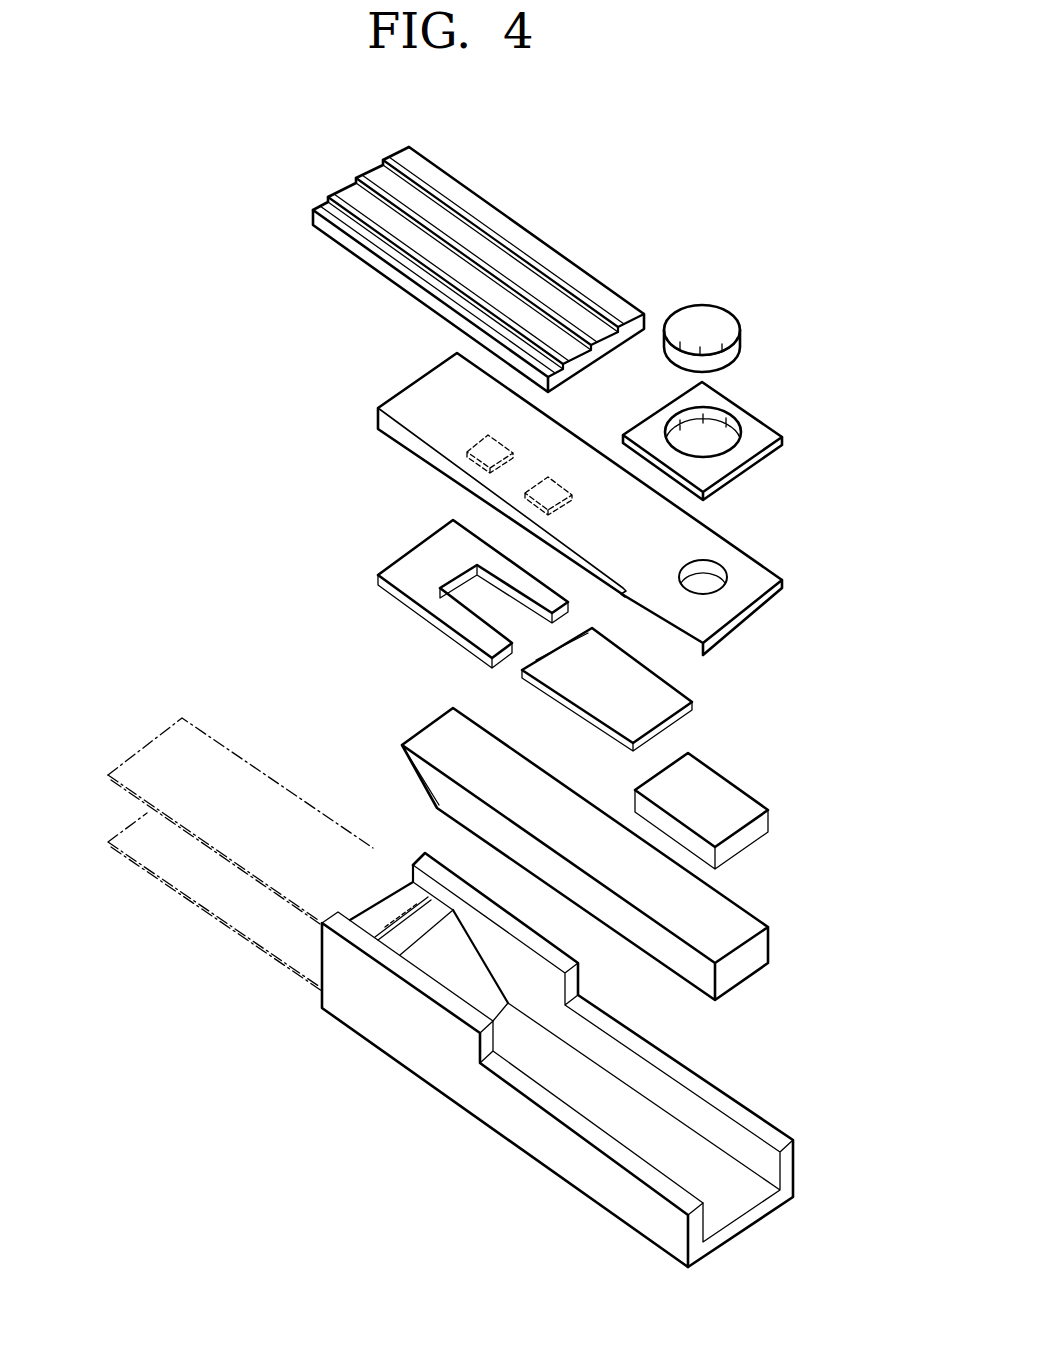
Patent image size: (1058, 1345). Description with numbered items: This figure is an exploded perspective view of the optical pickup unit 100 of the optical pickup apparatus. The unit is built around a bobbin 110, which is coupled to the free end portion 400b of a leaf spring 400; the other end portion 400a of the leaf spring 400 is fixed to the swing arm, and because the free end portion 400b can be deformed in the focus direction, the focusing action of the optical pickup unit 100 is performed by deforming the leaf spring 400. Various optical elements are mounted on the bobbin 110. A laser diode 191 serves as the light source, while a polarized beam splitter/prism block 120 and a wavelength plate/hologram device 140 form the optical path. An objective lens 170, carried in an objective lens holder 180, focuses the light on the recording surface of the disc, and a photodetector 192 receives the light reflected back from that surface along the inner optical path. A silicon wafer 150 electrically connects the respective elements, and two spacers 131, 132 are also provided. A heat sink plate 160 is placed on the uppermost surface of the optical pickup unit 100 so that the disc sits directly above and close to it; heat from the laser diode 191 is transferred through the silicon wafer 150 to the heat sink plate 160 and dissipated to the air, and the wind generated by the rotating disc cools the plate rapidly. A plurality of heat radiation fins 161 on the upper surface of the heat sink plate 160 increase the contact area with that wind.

The optical pickup unit 100 is at (148, 383).
The bobbin 110 is at (557, 1039).
The polarized beam splitter/prism block 120 is at (750, 968).
The spacer 131 is at (410, 590).
The spacer 132 is at (588, 692).
The wavelength plate/hologram device 140 is at (742, 795).
The silicon wafer (SiOB) 150 is at (550, 488).
The heat sink plate 160 is at (452, 242).
The heat radiation fins 161 is at (406, 148).
The objective lens 170 is at (733, 318).
The objective lens holder 180 is at (752, 424).
The laser diode 191 is at (528, 492).
The photodetector 192 is at (478, 447).
The leaf spring 400 is at (201, 827).
The one end portion of the leaf spring 400a is at (152, 850).
The free end portion of the leaf spring 400b is at (393, 911).